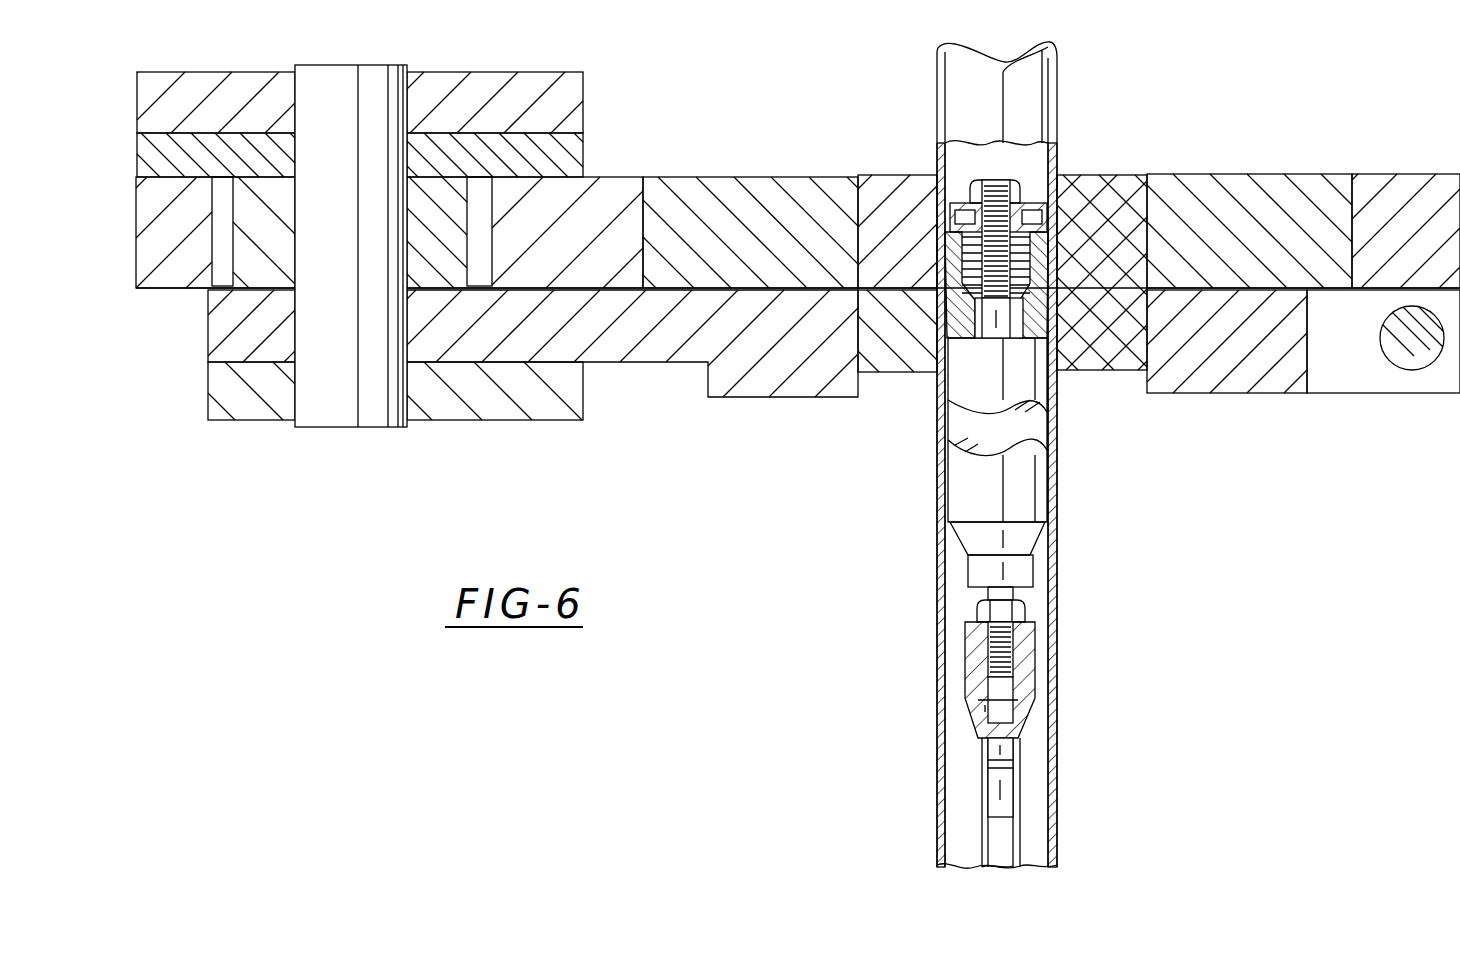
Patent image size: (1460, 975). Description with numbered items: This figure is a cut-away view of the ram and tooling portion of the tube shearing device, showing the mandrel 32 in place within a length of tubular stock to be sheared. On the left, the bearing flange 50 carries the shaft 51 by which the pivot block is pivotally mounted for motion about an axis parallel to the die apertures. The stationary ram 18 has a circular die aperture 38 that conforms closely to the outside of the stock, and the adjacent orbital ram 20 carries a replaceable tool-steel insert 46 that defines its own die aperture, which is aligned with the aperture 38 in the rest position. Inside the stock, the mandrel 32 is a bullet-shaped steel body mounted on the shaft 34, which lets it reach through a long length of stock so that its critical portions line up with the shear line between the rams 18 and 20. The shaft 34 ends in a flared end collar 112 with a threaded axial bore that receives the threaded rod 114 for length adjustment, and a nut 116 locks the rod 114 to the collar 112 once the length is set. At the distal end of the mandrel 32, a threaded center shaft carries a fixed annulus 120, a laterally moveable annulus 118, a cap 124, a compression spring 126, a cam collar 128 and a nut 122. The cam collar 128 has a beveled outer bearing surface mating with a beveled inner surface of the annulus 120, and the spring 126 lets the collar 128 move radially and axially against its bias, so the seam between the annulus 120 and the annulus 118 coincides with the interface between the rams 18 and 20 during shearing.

The stationary ram 18 is at (1263, 394).
The orbital ram 20 is at (1305, 174).
The mandrel 32 is at (958, 482).
The shaft 34 is at (1020, 813).
The circular die aperture 38 is at (858, 397).
The replaceable tool-steel insert 46 is at (867, 175).
The bearing flange 50 is at (583, 102).
The shaft 51 is at (362, 412).
The flared end collar 112 is at (977, 672).
The threaded rod 114 is at (1038, 672).
The nut 116 is at (1025, 613).
The laterally moveable annulus 118 is at (972, 250).
The fixed annulus 120 is at (1058, 313).
The nut 122 is at (1003, 180).
The cap 124 is at (1042, 215).
The compression spring 126 is at (965, 262).
The cam collar 128 is at (1032, 276).